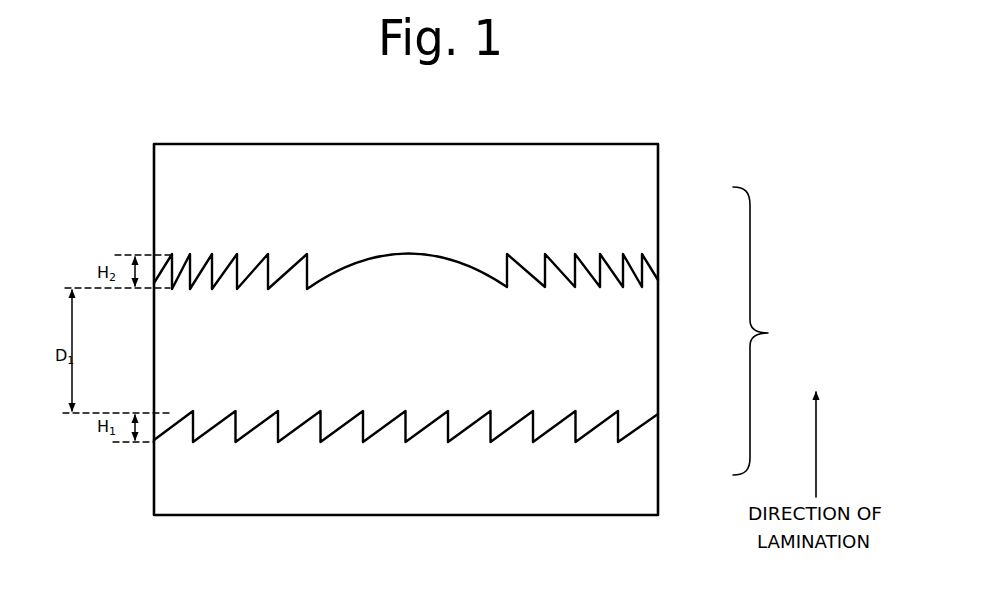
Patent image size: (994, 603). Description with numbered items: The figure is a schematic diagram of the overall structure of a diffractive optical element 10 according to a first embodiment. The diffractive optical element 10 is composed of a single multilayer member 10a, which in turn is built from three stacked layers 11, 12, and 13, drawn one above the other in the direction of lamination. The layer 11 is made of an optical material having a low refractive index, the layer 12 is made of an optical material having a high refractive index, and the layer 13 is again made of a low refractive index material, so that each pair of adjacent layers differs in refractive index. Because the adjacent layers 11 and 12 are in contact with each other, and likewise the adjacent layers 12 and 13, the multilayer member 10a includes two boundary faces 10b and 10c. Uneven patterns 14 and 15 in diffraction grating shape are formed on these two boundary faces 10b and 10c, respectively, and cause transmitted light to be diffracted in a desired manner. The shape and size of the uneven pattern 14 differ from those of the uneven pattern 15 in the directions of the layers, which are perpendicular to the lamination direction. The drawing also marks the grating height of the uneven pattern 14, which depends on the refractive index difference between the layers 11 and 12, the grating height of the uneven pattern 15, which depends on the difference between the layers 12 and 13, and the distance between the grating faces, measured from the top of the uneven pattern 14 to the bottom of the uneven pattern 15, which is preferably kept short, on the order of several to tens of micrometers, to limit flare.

The diffractive optical element 10 is at (100, 116).
The multilayer member 10a is at (780, 331).
The boundary face 10b is at (663, 425).
The boundary face 10c is at (663, 270).
The layer 11 is at (647, 461).
The layer 12 is at (647, 345).
The layer 13 is at (647, 210).
The uneven pattern 14 is at (348, 402).
The uneven pattern 15 is at (347, 246).